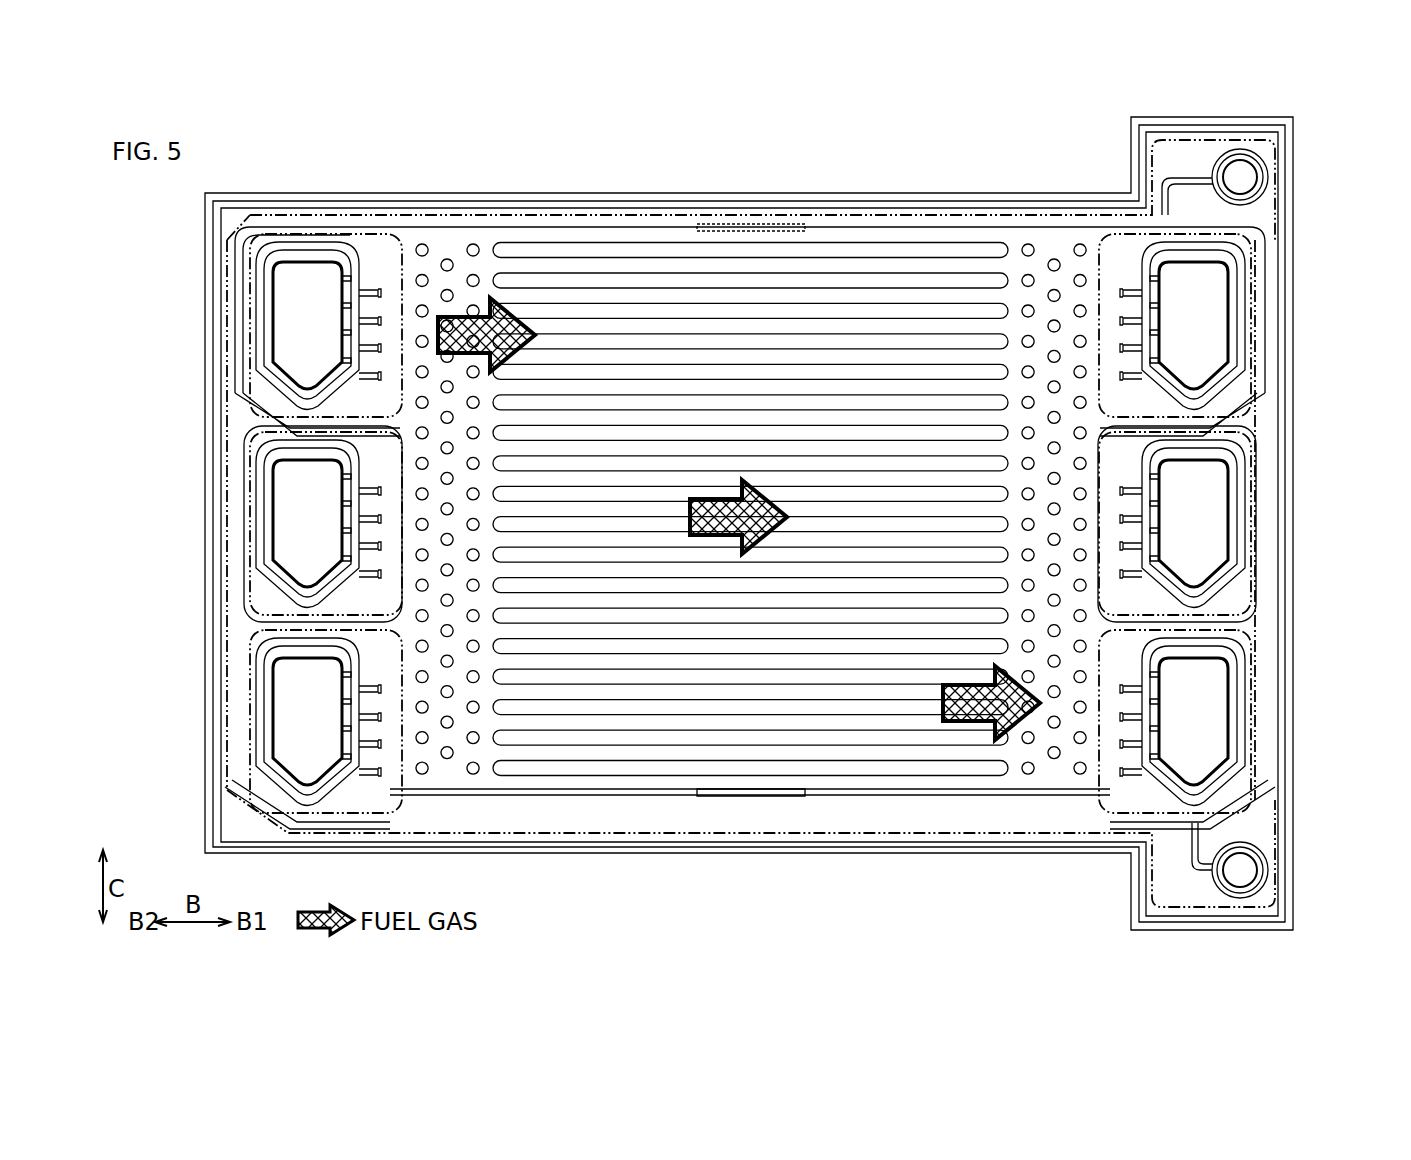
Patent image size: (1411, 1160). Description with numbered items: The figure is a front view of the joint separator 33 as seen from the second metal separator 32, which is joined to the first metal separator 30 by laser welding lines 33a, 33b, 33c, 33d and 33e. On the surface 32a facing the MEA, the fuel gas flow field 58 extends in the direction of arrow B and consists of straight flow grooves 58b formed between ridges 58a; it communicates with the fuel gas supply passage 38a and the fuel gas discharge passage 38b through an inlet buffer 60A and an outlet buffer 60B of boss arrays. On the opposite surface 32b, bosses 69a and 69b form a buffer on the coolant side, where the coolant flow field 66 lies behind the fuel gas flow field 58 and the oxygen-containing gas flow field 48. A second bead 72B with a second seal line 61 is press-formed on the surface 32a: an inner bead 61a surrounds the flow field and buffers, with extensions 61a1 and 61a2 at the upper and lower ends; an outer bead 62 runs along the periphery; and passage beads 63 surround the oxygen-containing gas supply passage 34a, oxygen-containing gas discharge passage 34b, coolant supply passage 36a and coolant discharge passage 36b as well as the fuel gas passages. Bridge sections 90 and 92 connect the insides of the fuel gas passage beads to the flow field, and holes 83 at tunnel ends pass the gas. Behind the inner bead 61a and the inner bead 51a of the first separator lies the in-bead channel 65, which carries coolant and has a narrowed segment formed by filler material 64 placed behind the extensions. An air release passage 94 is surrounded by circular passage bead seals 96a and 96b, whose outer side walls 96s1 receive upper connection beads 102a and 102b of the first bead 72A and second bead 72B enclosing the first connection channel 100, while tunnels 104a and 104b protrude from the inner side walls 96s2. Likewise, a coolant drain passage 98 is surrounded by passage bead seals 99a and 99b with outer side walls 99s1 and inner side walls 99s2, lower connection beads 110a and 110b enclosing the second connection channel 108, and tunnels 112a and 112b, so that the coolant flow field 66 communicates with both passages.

The first metal separator 30 is at (686, 236).
The second metal separator 32 is at (667, 236).
The joint separator 33 is at (296, 154).
The surface 32a is at (238, 808).
The surface 32b is at (240, 826).
The laser welding line 33a is at (1278, 305).
The laser welding line 33b is at (1262, 757).
The laser welding line 33c is at (247, 376).
The laser welding line 33d is at (247, 645).
The laser welding line 33e is at (728, 224).
The oxygen-containing gas supply passage 34a is at (1210, 290).
The oxygen-containing gas discharge passage 34b is at (290, 682).
The coolant supply passage 36a is at (1215, 503).
The coolant discharge passage 36b is at (292, 497).
The fuel gas supply passage 38a is at (290, 282).
The fuel gas discharge passage 38b is at (1215, 742).
The oxygen-containing gas flow field 48 is at (856, 265).
The inner bead 51a is at (937, 795).
The fuel gas flow field 58 is at (640, 158).
The ridges 58a is at (552, 282).
The straight flow grooves 58b is at (620, 266).
The inlet buffer 60A is at (475, 676).
The outlet buffer 60B is at (1082, 611).
The second seal line 61 is at (826, 847).
The inner bead 61a is at (863, 795).
The extension 61a1 is at (814, 233).
The extension 61a2 is at (504, 795).
The outer bead 62 is at (672, 840).
The passage beads 63 is at (258, 300).
The filler material 64 is at (760, 228).
The in-bead channel 65 is at (505, 240).
The coolant flow field 66 is at (906, 268).
The bosses 69a is at (447, 263).
The bosses 69b is at (1053, 260).
The first bead 72A is at (546, 847).
The second bead 72B is at (610, 847).
The hole 83 is at (342, 367).
The bridge section 90 is at (368, 262).
The bridge section 92 is at (1111, 762).
The air release passage 94 is at (1250, 177).
The passage bead seal 96a is at (1258, 158).
The passage bead seal 96b is at (1263, 165).
The outer side walls 96s1 is at (1237, 203).
The inner side walls 96s2 is at (1262, 187).
The coolant drain passage 98 is at (1245, 871).
The passage bead seal 99a is at (1253, 893).
The passage bead seal 99b is at (1267, 885).
The outer side walls 99s1 is at (1230, 850).
The inner side walls 99s2 is at (1248, 860).
The first connection channel 100 is at (1186, 172).
The upper connection bead 102a is at (1190, 178).
The upper connection bead 102b is at (1173, 176).
The tunnel 104a is at (1260, 185).
The tunnel 104b is at (1223, 172).
The second connection channel 108 is at (1205, 873).
The lower connection bead 110a is at (1215, 868).
The lower connection bead 110b is at (1192, 853).
The tunnel 112a is at (1266, 862).
The tunnel 112b is at (1167, 905).